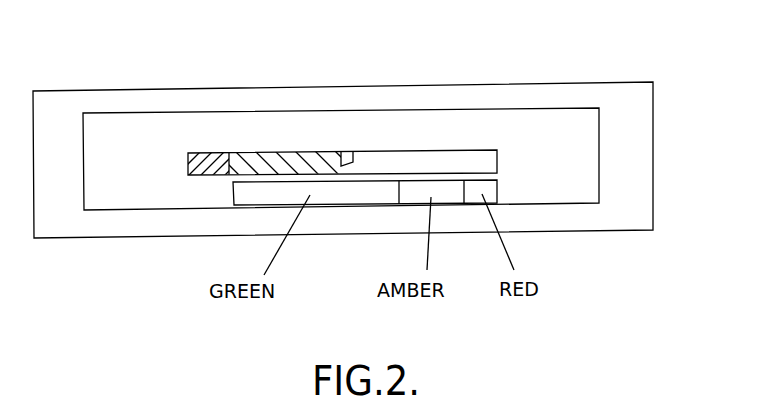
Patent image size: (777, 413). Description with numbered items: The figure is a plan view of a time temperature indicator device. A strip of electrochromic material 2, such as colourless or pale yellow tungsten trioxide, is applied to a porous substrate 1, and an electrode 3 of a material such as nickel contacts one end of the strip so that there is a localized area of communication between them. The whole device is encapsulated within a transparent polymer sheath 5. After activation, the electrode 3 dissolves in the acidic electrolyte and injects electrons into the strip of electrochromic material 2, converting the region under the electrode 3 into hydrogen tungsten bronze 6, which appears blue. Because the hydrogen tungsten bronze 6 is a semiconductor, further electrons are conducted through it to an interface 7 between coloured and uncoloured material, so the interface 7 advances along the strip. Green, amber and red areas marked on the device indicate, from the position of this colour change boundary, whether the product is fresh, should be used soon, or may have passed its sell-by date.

The porous substrate 1 is at (102, 148).
The strip of electrochromic material 2 is at (394, 162).
The electrode 3 is at (205, 153).
The transparent polymer sheath 5 is at (628, 116).
The hydrogen tungsten bronze 6 is at (287, 158).
The interface 7 is at (354, 163).